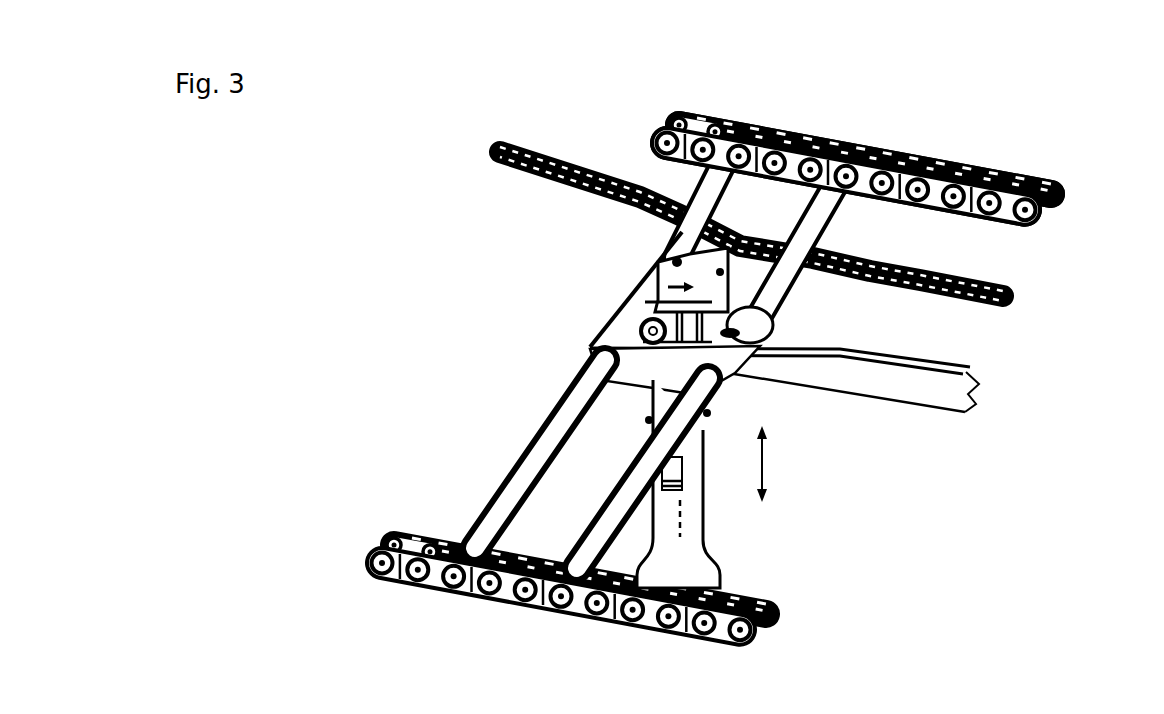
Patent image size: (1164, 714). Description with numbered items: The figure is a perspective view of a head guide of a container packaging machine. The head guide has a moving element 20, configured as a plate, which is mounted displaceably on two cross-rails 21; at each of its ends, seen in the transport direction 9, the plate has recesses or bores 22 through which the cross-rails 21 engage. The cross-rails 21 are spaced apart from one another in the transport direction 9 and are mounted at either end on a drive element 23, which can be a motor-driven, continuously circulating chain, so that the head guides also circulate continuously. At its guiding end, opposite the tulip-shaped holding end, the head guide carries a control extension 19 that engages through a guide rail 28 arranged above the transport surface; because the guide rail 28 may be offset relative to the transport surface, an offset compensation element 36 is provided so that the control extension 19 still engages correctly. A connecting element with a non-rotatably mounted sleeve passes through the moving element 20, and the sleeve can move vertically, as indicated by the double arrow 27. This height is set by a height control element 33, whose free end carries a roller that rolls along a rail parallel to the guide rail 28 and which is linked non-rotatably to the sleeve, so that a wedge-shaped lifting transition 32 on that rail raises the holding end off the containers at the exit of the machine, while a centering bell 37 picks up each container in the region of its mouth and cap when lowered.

The transport direction 9 is at (515, 657).
The control extension 19 is at (753, 128).
The moving element 20 is at (623, 328).
The cross-rails 21 is at (607, 508).
The recesses or bores 22 is at (590, 350).
The drive element 23 is at (925, 155).
The double arrow 27 is at (775, 464).
The guide rail 28 is at (1010, 266).
The lifting transition 32 is at (975, 372).
The height control element 33 is at (640, 297).
The offset compensation element 36 is at (637, 287).
The centering bell 37 is at (686, 552).